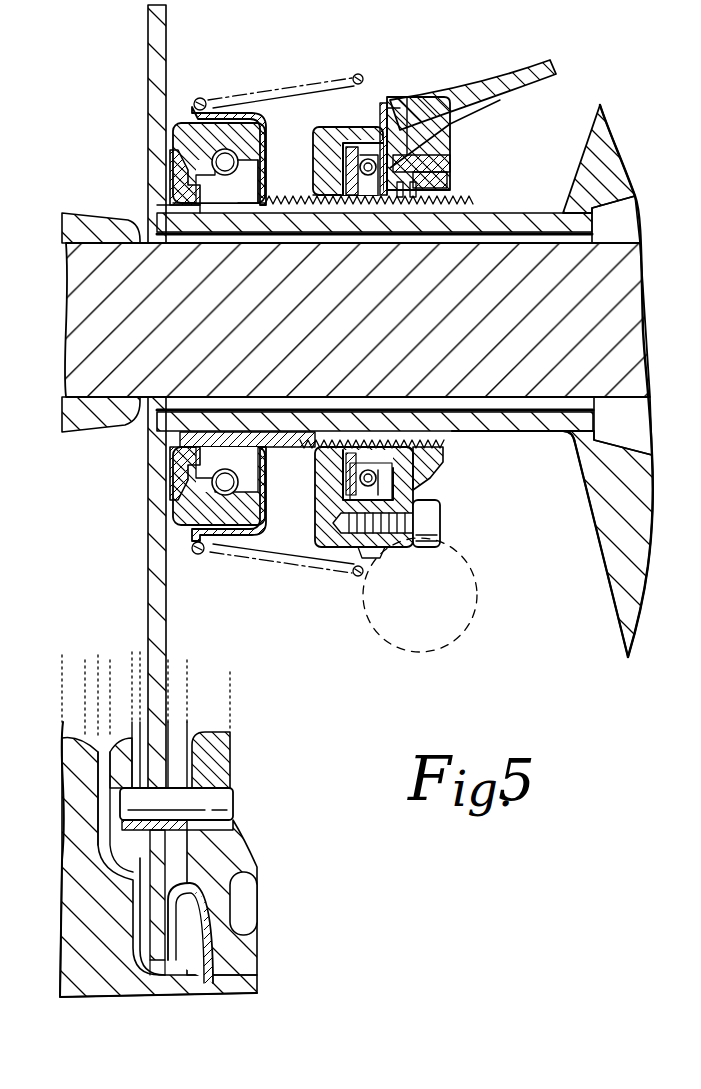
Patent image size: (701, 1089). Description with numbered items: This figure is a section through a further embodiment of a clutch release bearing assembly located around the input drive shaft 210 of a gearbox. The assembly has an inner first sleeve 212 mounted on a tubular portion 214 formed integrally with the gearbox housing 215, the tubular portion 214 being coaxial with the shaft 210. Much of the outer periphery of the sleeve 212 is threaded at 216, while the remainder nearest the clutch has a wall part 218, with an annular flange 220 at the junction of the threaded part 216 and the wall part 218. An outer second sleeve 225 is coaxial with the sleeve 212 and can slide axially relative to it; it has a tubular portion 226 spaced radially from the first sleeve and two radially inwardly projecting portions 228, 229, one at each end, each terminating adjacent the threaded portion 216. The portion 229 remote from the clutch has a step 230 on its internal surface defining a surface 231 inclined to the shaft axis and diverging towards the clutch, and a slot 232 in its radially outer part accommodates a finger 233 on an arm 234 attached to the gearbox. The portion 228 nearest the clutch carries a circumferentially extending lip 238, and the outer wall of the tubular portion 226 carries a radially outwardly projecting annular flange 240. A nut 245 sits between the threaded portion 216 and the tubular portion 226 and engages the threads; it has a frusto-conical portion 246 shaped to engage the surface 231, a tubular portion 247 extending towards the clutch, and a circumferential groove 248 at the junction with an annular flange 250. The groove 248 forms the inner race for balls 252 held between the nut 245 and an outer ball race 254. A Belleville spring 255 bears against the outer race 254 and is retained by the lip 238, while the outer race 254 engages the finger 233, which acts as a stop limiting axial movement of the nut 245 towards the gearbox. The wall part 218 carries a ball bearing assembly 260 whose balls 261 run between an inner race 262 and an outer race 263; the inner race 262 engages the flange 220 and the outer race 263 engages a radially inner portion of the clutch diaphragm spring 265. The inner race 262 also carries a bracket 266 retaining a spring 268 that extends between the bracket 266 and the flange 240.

The input drive shaft 210 is at (532, 430).
The inner first sleeve 212 is at (438, 432).
The tubular portion 214 is at (542, 213).
The gearbox housing 215 is at (596, 170).
The threaded portion 216 is at (440, 210).
The wall part 218 is at (192, 211).
The annular flange 220 is at (248, 207).
The outer second sleeve 225 is at (345, 128).
The tubular portion 226 is at (378, 150).
The radially inwardly projecting portion 228 is at (318, 158).
The radially inwardly projecting portion 229 is at (452, 187).
The step 230 is at (442, 152).
The surface 231 is at (455, 170).
The slot 232 is at (460, 118).
The finger 233 is at (438, 122).
The arm 234 is at (528, 72).
The lip 238 is at (325, 200).
The annular flange 240 is at (384, 105).
The nut 245 is at (385, 200).
The frusto-conical portion 246 is at (420, 200).
The tubular portion 247 is at (357, 196).
The circumferential groove 248 is at (380, 432).
The annular flange 250 is at (335, 492).
The balls 252 is at (400, 483).
The outer ball race 254 is at (392, 115).
The Belleville spring 255 is at (335, 465).
The ball bearing assembly 260 is at (208, 215).
The balls 261 is at (232, 150).
The inner race 262 is at (192, 188).
The outer race 263 is at (192, 145).
The diaphragm spring 265 is at (150, 62).
The bracket 266 is at (268, 150).
The spring 268 is at (330, 82).